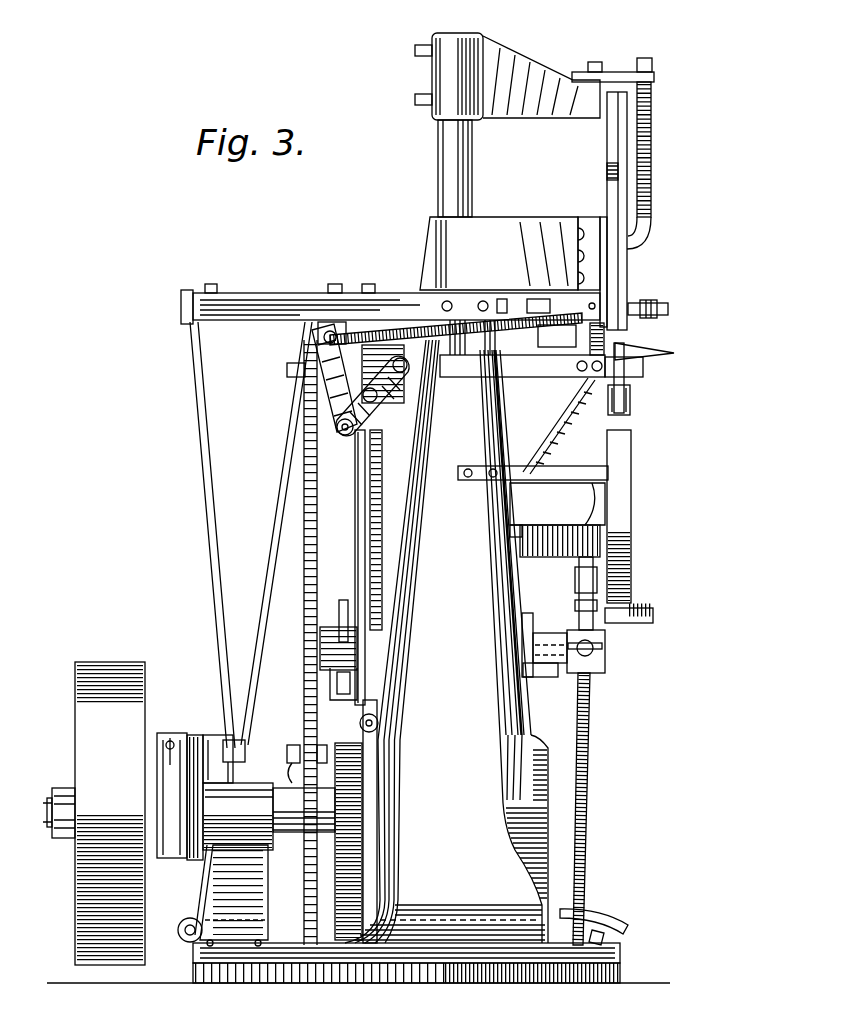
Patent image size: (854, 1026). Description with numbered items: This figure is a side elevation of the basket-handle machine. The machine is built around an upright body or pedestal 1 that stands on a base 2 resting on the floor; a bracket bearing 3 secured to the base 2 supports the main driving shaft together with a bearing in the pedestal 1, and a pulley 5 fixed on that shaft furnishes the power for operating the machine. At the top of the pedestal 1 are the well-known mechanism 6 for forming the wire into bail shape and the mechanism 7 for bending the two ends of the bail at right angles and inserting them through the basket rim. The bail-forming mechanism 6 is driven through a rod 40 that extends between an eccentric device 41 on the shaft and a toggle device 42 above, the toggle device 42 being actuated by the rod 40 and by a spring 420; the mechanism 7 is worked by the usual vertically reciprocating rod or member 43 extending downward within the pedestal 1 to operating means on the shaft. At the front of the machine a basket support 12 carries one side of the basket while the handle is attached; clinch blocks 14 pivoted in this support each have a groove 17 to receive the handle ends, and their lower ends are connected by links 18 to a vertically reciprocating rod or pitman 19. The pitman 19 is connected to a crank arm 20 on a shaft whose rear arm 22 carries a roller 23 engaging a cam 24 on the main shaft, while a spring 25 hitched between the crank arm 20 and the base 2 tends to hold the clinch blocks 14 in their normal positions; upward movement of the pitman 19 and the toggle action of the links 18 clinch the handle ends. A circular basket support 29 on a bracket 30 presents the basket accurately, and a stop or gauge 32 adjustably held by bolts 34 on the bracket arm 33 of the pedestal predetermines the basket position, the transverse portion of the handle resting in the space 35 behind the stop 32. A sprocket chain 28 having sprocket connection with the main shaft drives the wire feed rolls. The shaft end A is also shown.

The upright body or pedestal 1 is at (487, 727).
The base 2 is at (363, 970).
The bracket bearing 3 is at (250, 845).
The pulley 5 is at (105, 727).
The mechanism for forming the wire into bail shape 6 is at (428, 318).
The mechanism for bending and inserting the bail ends 7 is at (607, 283).
The basket support 12 is at (621, 342).
The clinch blocks 14 is at (625, 372).
The groove 17 is at (624, 344).
The links 18 is at (632, 413).
The vertically reciprocating rod or pitman 19 is at (595, 495).
The crank arm 20 is at (605, 648).
The arm 22 is at (342, 645).
The roller 23 is at (350, 693).
The cam 24 is at (348, 863).
The spring 25 is at (580, 872).
The sprocket chain 28 is at (310, 478).
The circular basket support 29 is at (622, 482).
The bracket 30 is at (558, 542).
The stop or gauge 32 is at (623, 322).
The bracket arm 33 is at (533, 363).
The bolts 34 is at (568, 425).
The space 35 is at (577, 333).
The rod 40 is at (362, 513).
The eccentric device 41 is at (372, 802).
The toggle device 42 is at (337, 413).
The vertically reciprocating rod or member 43 is at (457, 176).
The spring 420 is at (380, 332).
The shaft end A is at (45, 818).